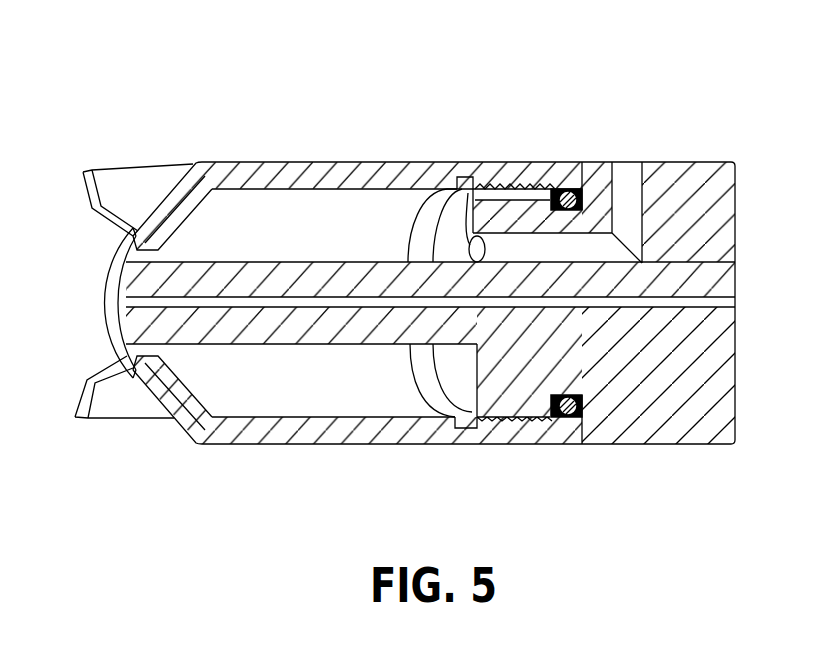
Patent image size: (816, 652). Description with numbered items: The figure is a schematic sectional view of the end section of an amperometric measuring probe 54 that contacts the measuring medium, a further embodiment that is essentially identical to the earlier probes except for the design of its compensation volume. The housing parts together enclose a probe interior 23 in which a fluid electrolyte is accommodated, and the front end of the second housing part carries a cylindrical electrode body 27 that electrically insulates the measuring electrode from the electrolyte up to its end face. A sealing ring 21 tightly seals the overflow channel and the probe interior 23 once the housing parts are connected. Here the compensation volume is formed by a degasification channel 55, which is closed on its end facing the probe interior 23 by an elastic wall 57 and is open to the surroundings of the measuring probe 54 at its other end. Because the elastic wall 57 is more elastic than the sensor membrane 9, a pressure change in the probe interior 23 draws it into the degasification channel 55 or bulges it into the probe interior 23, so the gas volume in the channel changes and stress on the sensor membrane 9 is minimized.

The measuring probe 54 is at (674, 110).
The cylindrical electrode body 27 is at (363, 330).
The degasification channel 55 is at (509, 245).
The sealing ring 21 is at (571, 418).
The elastic wall 57 is at (432, 262).
The probe interior 23 is at (299, 393).
The sensor membrane 9 is at (108, 289).